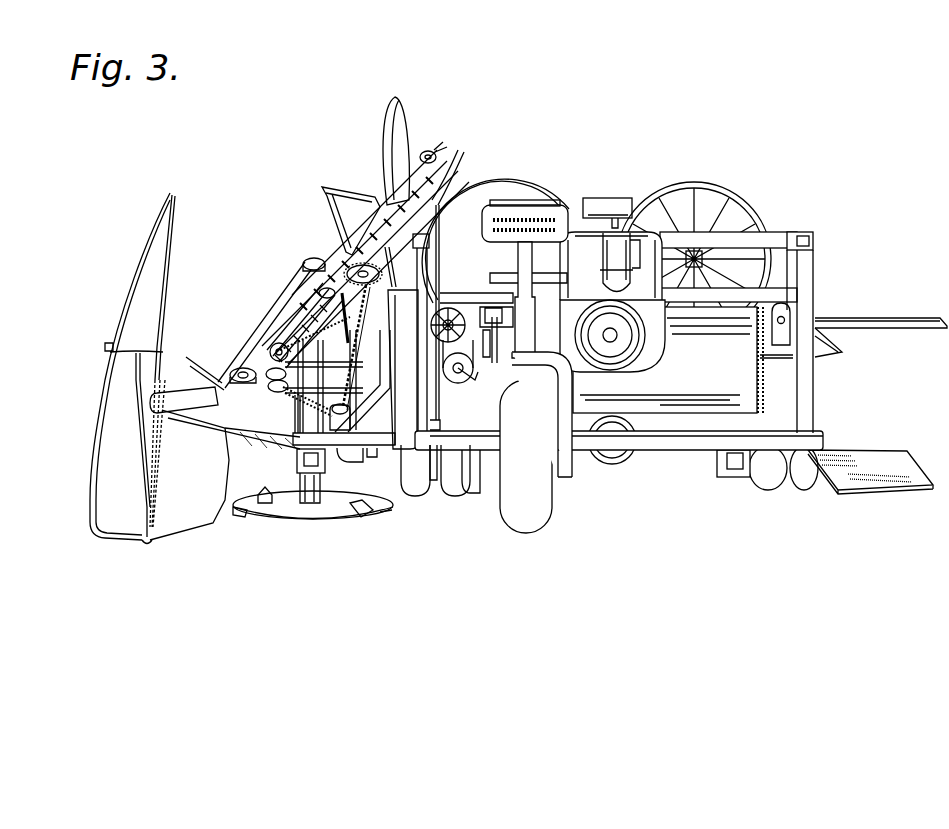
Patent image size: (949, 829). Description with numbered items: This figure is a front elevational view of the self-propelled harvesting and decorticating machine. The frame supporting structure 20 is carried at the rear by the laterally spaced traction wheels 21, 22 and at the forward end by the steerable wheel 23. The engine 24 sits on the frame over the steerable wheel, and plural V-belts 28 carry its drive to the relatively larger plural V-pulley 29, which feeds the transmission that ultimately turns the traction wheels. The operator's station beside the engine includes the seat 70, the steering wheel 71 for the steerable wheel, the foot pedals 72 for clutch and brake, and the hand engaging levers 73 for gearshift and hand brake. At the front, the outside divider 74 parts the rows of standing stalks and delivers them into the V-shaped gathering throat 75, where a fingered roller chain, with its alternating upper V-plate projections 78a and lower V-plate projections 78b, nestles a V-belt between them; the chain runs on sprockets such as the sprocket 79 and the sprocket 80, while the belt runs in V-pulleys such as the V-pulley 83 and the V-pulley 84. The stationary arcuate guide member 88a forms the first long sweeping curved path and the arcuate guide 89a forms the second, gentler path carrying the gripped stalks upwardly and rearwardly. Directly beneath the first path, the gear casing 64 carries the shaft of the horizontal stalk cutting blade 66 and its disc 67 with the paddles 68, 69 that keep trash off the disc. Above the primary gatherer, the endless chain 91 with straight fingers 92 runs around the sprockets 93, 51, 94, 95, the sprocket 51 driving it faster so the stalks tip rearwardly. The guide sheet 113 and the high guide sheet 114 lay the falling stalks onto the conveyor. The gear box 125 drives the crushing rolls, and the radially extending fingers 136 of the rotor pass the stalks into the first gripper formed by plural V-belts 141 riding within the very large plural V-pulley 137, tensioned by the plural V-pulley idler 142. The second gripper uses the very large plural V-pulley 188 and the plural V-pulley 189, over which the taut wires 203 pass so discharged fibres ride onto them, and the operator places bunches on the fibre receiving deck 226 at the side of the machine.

The frame supporting structure 20 is at (680, 463).
The traction wheel 21 is at (780, 492).
The traction wheel 22 is at (435, 496).
The steerable wheel 23 is at (533, 535).
The engine 24 is at (659, 342).
The V-belts 28 is at (652, 432).
The plural V-pulley 29 is at (612, 464).
The sprocket 51 is at (393, 250).
The gear casing 64 is at (322, 482).
The stalk cutting blade 66 is at (373, 508).
The disc 67 is at (318, 519).
The paddle 68 is at (262, 485).
The paddle 69 is at (382, 514).
The seat 70 is at (560, 290).
The steering wheel 71 is at (520, 204).
The foot pedals 72 is at (518, 372).
The hand engaging levers 73 is at (441, 225).
The outside divider 74 is at (142, 503).
The gathering throat 75 is at (218, 520).
The upper V-plate projections 78a is at (245, 432).
The lower V-plate projections 78b is at (270, 392).
The sprocket 79 is at (245, 368).
The sprocket 80 is at (352, 412).
The V-pulley 83 is at (203, 363).
The V-pulley 84 is at (152, 408).
The arcuate guide member 88a is at (300, 312).
The arcuate guide 89a is at (300, 270).
The endless chain 91 is at (378, 322).
The fingers 92 is at (458, 166).
The sprocket 93 is at (275, 345).
The sprocket 94 is at (330, 254).
The sprocket 95 is at (431, 150).
The guide sheet 113 is at (388, 115).
The guide sheet 114 is at (322, 188).
The gear box 125 is at (485, 192).
The radially extending fingers 136 is at (473, 317).
The plural V-pulley 137 is at (555, 185).
The plural V-belts 141 is at (470, 384).
The plural V-pulley idler 142 is at (470, 400).
The plural V-pulley 188 is at (733, 190).
The plural V-pulley 189 is at (793, 290).
The taut wires 203 is at (842, 352).
The fibre receiving deck 226 is at (898, 317).